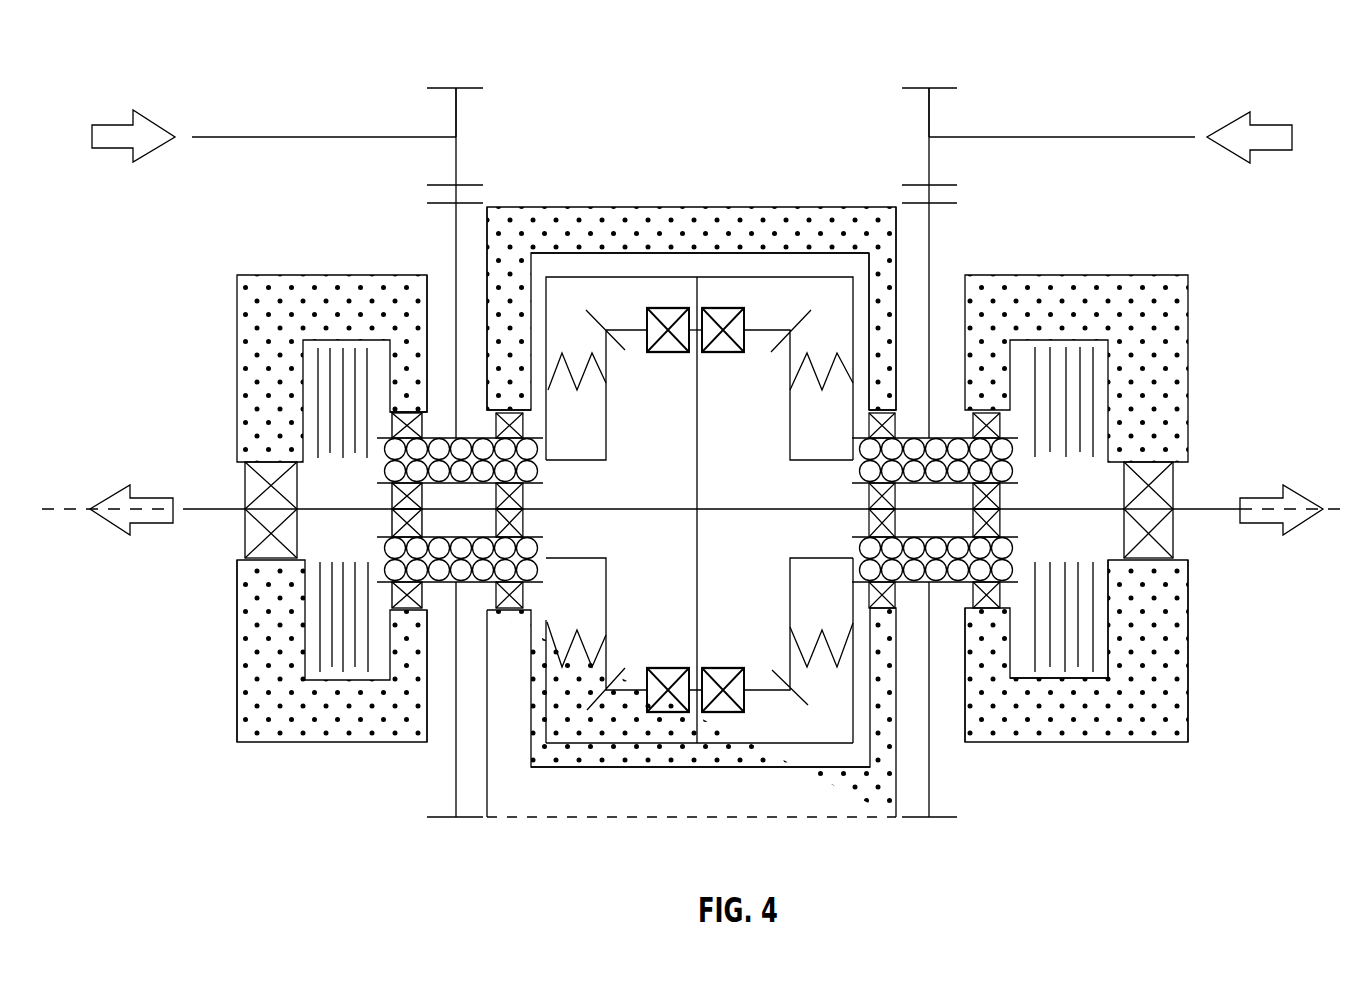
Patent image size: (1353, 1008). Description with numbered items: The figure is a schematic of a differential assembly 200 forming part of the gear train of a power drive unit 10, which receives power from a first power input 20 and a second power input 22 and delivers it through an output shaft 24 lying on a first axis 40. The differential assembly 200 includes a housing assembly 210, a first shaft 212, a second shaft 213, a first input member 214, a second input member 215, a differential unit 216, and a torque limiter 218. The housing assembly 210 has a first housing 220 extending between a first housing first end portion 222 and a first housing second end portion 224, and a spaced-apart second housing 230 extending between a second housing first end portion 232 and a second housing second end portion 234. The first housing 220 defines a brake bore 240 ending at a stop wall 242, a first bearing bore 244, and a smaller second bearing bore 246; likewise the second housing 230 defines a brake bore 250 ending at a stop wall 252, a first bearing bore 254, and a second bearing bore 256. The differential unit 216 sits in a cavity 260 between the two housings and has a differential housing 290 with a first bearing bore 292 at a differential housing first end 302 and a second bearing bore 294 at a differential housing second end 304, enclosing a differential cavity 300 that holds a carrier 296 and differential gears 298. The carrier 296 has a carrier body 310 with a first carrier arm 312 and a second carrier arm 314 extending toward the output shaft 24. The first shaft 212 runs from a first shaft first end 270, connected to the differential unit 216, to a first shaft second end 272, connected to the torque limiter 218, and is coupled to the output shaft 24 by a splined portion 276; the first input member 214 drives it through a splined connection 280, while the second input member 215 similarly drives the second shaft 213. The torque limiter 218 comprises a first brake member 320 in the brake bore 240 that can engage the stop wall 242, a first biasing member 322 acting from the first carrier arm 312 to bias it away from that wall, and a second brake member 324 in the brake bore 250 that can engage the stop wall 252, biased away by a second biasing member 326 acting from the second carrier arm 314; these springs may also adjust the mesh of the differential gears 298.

The power drive unit 10 is at (1063, 31).
The first power input 20 is at (1268, 125).
The second power input 22 is at (113, 122).
The output shaft 24 is at (709, 501).
The first axis 40 is at (58, 512).
The differential assembly 200 is at (1063, 95).
The housing assembly 210 is at (593, 142).
The first shaft 212 is at (838, 469).
The second shaft 213 is at (578, 467).
The first input member 214 is at (920, 218).
The second input member 215 is at (442, 222).
The differential unit 216 is at (741, 186).
The torque limiter 218 is at (1083, 502).
The first housing 220 is at (1151, 755).
The first housing first end portion 222 is at (1165, 682).
The first housing second end portion 224 is at (990, 720).
The second housing 230 is at (322, 767).
The second housing first end portion 232 is at (410, 732).
The second housing second end portion 234 is at (268, 732).
The brake bore 240 is at (1020, 660).
The stop wall 242 is at (1104, 600).
The first bearing bore 244 is at (1184, 465).
The second bearing bore 246 is at (950, 420).
The brake bore 250 is at (360, 343).
The stop wall 252 is at (294, 362).
The first bearing bore 254 is at (422, 420).
The second bearing bore 256 is at (244, 463).
The cavity 260 is at (469, 250).
The first shaft first end 270 is at (808, 460).
The first shaft second end 272 is at (1040, 460).
The splined portion 276 is at (1023, 549).
The splined connection 280 is at (527, 614).
The differential housing 290 is at (774, 232).
The first bearing bore 292 is at (880, 402).
The second bearing bore 294 is at (512, 400).
The carrier 296 is at (745, 754).
The differential gears 298 is at (608, 664).
The differential cavity 300 is at (568, 754).
The differential housing first end 302 is at (880, 322).
The differential housing second end 304 is at (504, 323).
The carrier body 310 is at (670, 745).
The first carrier arm 312 is at (846, 735).
The second carrier arm 314 is at (556, 735).
The first brake member 320 is at (1102, 357).
The first biasing member 322 is at (832, 672).
The second brake member 324 is at (304, 390).
The second biasing member 326 is at (583, 620).